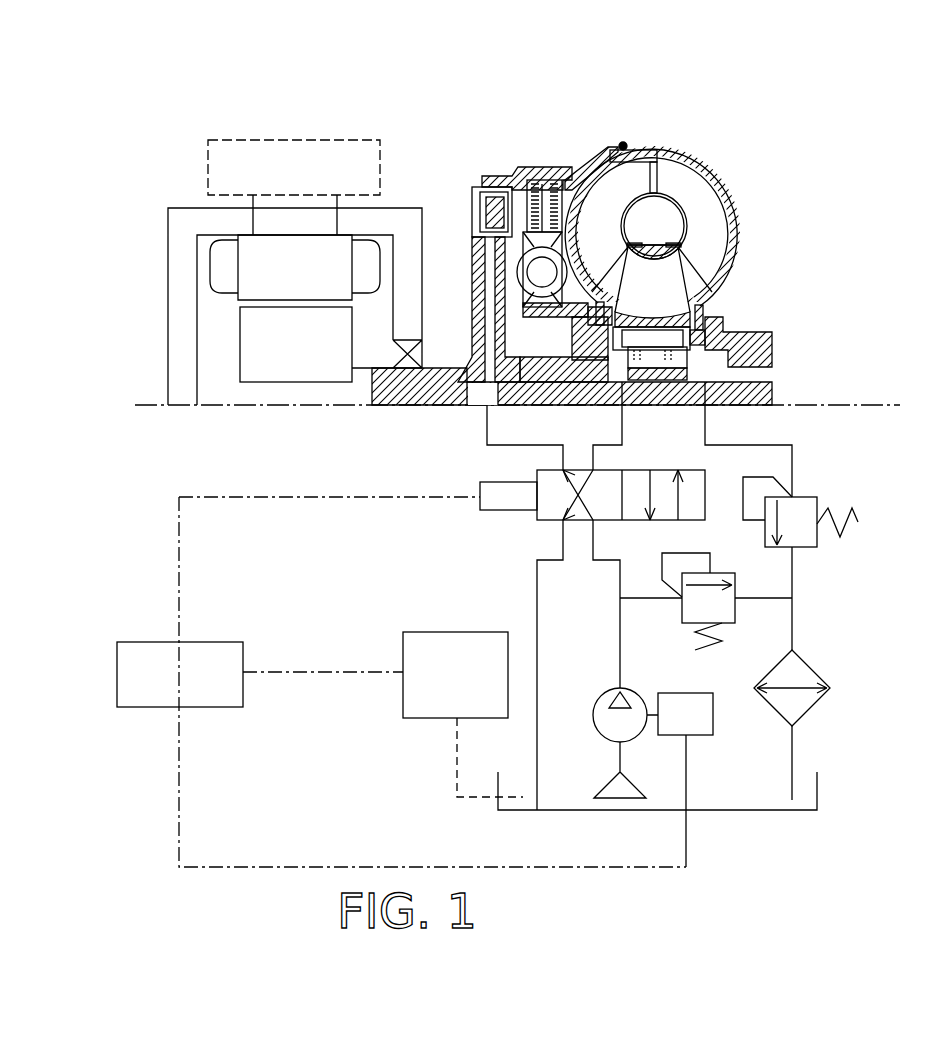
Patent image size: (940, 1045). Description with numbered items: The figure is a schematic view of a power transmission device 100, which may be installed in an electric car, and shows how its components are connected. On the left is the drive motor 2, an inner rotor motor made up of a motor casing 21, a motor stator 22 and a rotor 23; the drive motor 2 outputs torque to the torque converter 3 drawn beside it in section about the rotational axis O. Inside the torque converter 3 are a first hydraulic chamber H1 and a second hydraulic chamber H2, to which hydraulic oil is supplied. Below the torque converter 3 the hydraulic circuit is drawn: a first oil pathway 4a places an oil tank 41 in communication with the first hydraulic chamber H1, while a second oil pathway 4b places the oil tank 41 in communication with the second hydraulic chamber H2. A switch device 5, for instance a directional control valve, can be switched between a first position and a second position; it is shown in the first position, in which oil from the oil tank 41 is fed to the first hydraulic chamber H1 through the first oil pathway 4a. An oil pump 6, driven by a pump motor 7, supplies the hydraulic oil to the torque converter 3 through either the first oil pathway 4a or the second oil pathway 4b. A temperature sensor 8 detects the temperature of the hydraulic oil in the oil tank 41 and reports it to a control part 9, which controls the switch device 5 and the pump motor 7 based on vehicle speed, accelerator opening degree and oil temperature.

The power transmission device 100 is at (815, 108).
The drive motor 2 is at (168, 203).
The motor casing 21 is at (213, 218).
The motor stator 22 is at (225, 268).
The rotor 23 is at (255, 348).
The torque converter 3 is at (637, 131).
The first hydraulic chamber H1 is at (468, 230).
The second hydraulic chamber H2 is at (550, 238).
The first oil pathway 4a is at (487, 425).
The second oil pathway 4b is at (622, 413).
The switch device 5 is at (480, 498).
The oil pump 6 is at (640, 737).
The pump motor 7 is at (713, 725).
The temperature sensor 8 is at (403, 700).
The control part 9 is at (116, 642).
The oil tank 41 is at (548, 810).